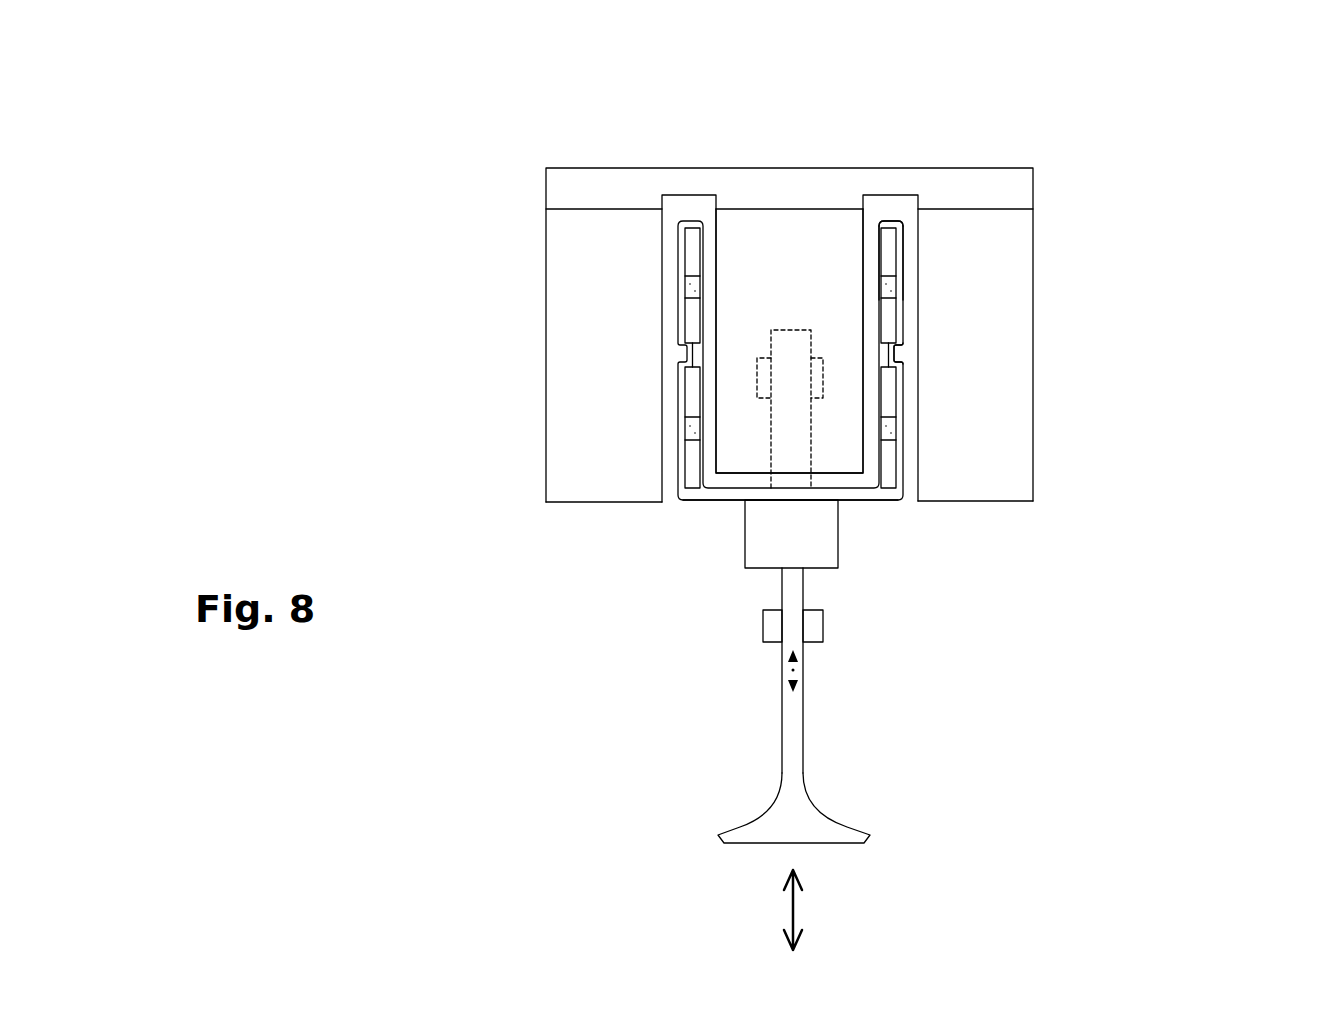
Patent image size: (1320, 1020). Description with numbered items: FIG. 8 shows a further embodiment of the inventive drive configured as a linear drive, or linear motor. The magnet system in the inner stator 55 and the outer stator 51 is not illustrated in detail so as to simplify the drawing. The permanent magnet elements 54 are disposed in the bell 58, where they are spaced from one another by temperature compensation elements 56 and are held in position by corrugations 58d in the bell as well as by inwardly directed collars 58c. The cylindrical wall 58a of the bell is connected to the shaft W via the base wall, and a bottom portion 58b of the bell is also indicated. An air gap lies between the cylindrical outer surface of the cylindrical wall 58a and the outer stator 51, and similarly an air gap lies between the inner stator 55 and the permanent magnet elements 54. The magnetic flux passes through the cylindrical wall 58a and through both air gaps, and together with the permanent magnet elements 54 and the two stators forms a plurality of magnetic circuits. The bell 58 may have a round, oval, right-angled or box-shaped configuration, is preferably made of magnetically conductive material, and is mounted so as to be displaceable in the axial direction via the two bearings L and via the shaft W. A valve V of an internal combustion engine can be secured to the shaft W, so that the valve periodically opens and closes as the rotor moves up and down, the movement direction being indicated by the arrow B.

The outer stator 51 is at (997, 279).
The permanent magnet elements 54 is at (888, 397).
The inner stator 55 is at (744, 243).
The temperature compensation elements 56 is at (892, 427).
The bell 58 is at (885, 493).
The cylindrical wall 58a is at (895, 248).
The sleeve bottom 58b is at (725, 493).
The inwardly directed collars 58c is at (890, 222).
The corrugations 58d is at (895, 355).
The bearings L is at (758, 388).
The shaft W is at (805, 483).
The valve V is at (797, 670).
The actuation direction B is at (813, 908).